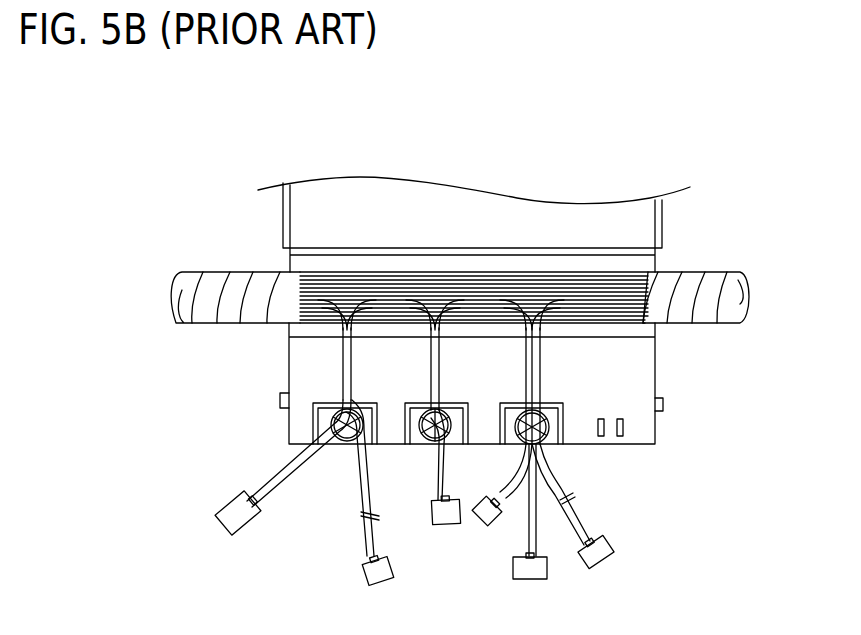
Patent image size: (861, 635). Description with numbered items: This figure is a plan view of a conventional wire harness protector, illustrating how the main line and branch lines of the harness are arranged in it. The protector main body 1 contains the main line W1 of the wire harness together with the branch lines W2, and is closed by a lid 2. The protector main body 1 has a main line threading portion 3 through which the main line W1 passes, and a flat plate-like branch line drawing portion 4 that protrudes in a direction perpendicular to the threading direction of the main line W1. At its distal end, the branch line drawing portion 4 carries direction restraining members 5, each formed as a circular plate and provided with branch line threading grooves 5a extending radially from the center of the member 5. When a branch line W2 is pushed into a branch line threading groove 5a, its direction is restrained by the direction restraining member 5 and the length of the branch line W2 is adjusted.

The protector main body 1 is at (655, 347).
The lid 2 is at (470, 222).
The main line threading portion 3 is at (376, 263).
The branch line drawing portion 4 is at (640, 428).
The direction restraining member 5 is at (333, 442).
The branch line threading groove 5a is at (362, 432).
The main line W1 is at (600, 280).
The branch line W2 is at (343, 367).